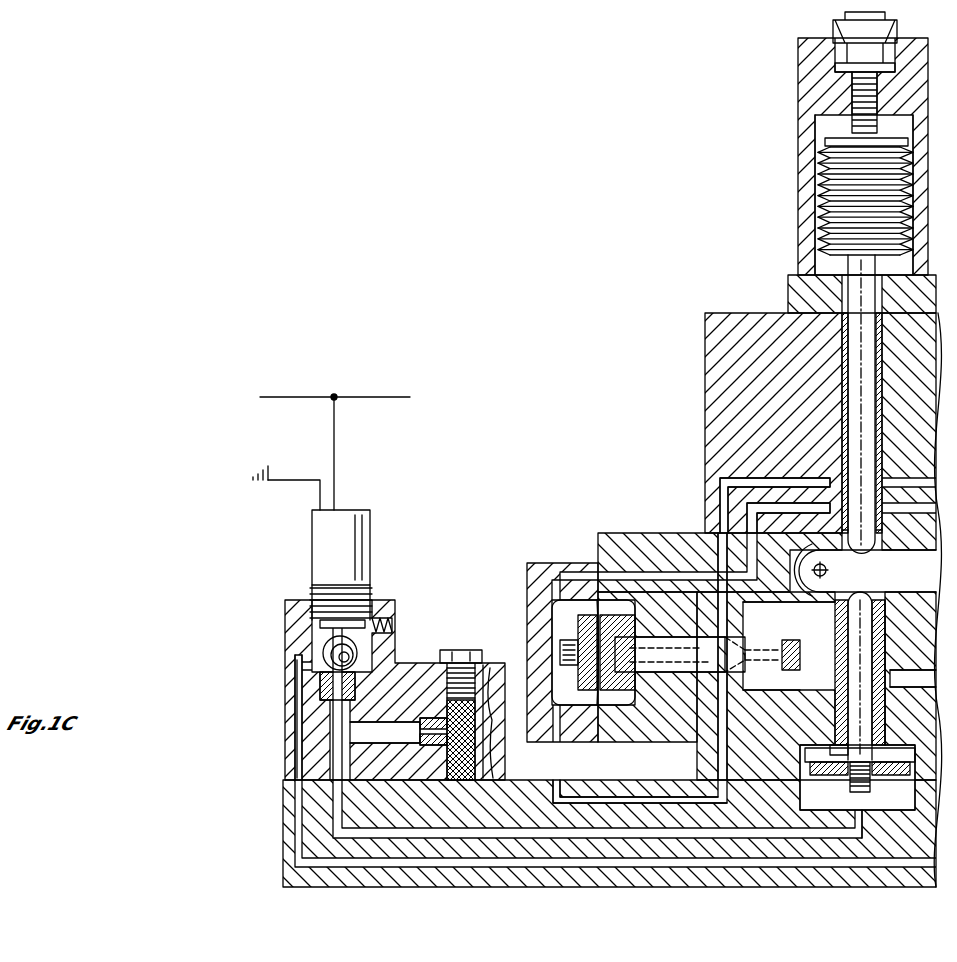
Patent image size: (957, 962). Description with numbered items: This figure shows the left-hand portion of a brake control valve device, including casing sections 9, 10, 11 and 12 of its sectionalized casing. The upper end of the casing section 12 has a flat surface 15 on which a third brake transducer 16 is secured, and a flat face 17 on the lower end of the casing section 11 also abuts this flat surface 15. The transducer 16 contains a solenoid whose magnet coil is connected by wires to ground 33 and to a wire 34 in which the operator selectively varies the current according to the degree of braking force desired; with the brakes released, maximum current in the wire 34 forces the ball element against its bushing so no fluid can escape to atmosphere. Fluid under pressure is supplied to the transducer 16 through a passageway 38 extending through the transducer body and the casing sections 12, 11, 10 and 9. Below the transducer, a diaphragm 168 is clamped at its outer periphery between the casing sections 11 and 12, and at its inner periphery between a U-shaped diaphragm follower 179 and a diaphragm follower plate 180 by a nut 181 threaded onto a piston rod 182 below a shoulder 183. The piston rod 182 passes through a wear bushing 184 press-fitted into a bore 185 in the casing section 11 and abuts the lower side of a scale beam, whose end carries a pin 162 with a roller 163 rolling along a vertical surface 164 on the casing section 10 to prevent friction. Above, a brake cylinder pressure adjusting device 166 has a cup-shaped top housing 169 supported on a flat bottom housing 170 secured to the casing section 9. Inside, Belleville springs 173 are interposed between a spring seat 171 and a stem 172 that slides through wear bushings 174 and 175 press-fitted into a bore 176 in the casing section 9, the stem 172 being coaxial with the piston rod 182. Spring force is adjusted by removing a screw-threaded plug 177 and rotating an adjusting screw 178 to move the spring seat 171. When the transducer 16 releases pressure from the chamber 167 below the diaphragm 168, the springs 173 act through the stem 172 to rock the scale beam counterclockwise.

The casing section 9 is at (715, 368).
The casing section 10 is at (665, 548).
The casing section 11 is at (712, 750).
The casing section 12 is at (622, 782).
The flat surface 15 is at (572, 782).
The third brake transducer 16 is at (398, 606).
The flat face 17 is at (695, 782).
The ground 33 is at (256, 488).
The wire 34 is at (375, 397).
The passageway 38 is at (760, 482).
The pin 162 is at (828, 570).
The roller 163 is at (808, 556).
The vertical surface 164 is at (789, 646).
The brake cylinder pressure adjusting device 166 is at (790, 174).
The chamber 167 is at (862, 808).
The diaphragm 168 is at (808, 768).
The cup-shaped top housing 169 is at (812, 236).
The flat bottom housing 170 is at (798, 292).
The spring seat 171 is at (825, 142).
The stem 172 is at (856, 408).
The Belleville springs 173 is at (825, 210).
The wear bushing 174 is at (842, 365).
The wear bushing 175 is at (842, 466).
The bore 176 is at (882, 421).
The screw-threaded plug 177 is at (840, 22).
The adjusting screw 178 is at (852, 90).
The U-shaped diaphragm follower 179 is at (830, 750).
The diaphragm follower plate 180 is at (806, 794).
The nut 181 is at (875, 778).
The piston rod 182 is at (860, 662).
The shoulder 183 is at (850, 780).
The wear bushing 184 is at (840, 705).
The bore 185 is at (880, 726).